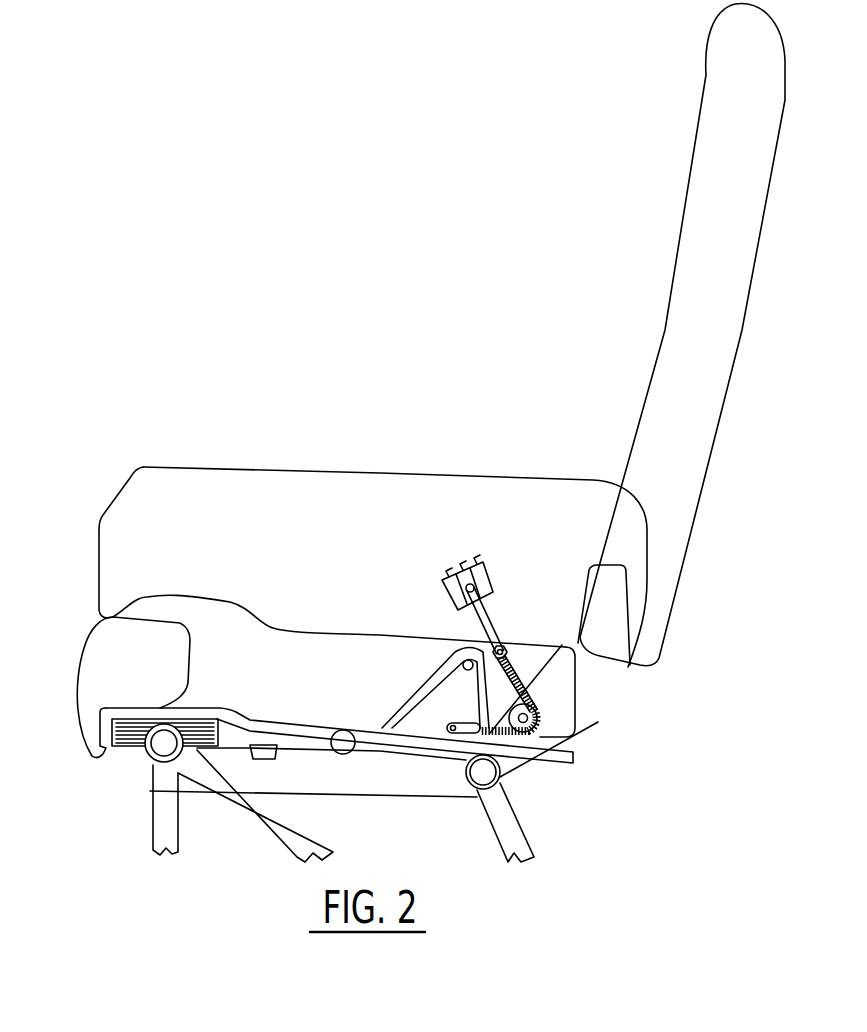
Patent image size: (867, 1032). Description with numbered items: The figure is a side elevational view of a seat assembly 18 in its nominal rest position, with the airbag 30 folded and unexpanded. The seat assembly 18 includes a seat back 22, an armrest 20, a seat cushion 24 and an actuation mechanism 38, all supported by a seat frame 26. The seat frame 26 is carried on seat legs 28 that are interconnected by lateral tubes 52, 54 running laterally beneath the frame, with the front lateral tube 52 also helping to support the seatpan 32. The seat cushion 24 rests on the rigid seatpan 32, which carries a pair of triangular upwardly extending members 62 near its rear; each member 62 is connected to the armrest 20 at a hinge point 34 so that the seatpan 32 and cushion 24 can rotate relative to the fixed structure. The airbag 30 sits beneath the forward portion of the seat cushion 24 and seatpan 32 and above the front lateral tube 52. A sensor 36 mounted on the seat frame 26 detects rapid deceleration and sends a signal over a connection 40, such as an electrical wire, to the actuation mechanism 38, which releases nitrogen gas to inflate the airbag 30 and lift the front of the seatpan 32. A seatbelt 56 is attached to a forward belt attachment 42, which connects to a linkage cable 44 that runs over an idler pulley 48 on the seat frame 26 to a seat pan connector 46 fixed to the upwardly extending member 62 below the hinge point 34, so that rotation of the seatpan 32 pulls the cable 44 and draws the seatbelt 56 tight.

The seat assembly 18 is at (503, 312).
The armrest 20 is at (318, 487).
The seat back 22 is at (687, 273).
The seat cushion 24 is at (90, 695).
The seat frame 26 is at (405, 793).
The seat legs 28 is at (493, 812).
The airbag 30 is at (120, 752).
The seatpan 32 is at (303, 732).
The hinge point 34 is at (463, 667).
The sensor 36 is at (258, 760).
The actuation mechanism 38 is at (126, 748).
The connection 40 is at (232, 800).
The forward belt attachment 42 is at (490, 630).
The linkage cable 44 is at (540, 713).
The seat pan connector 46 is at (466, 722).
The idler pulley 48 is at (575, 738).
The front lateral tube 52 is at (166, 764).
The lateral tube 54 is at (504, 774).
The seatbelt 56 is at (473, 580).
The upwardly extending member 62 is at (390, 723).